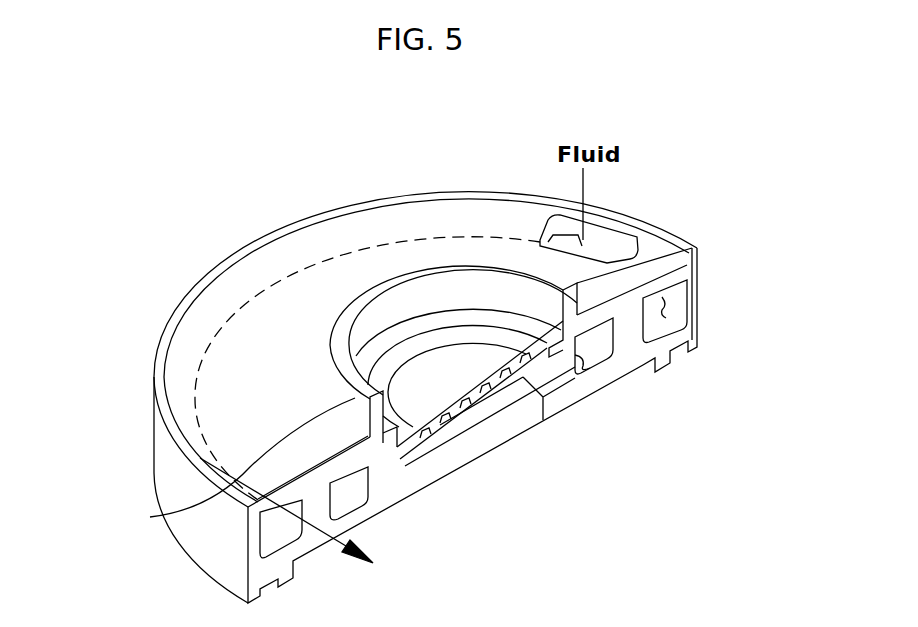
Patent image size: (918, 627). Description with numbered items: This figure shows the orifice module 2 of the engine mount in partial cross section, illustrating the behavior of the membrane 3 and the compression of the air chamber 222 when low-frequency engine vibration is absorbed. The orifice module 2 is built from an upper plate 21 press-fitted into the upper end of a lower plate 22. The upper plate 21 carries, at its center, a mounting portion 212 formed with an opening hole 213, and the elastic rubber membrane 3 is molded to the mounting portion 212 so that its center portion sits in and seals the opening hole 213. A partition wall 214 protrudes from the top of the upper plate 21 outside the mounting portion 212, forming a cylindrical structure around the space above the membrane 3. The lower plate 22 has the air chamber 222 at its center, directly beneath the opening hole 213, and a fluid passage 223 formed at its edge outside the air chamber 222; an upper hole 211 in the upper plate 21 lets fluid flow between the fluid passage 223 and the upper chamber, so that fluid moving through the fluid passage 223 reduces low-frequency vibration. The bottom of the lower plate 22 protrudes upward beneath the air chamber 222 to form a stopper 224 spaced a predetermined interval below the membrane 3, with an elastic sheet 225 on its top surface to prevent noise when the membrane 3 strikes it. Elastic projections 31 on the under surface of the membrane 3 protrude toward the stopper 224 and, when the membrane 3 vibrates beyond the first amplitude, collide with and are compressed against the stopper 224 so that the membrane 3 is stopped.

The orifice module 2 is at (212, 251).
The membrane 3 is at (448, 363).
The upper plate 21 is at (187, 350).
The lower plate 22 is at (170, 455).
The elastic projections 31 is at (523, 383).
The upper hole 211 is at (626, 246).
The mounting portion 212 is at (395, 448).
The opening hole 213 is at (413, 450).
The partition wall 214 is at (152, 517).
The air chamber 222 is at (580, 360).
The fluid passage 223 is at (667, 303).
The stopper 224 is at (487, 420).
The elastic sheet 225 is at (448, 424).